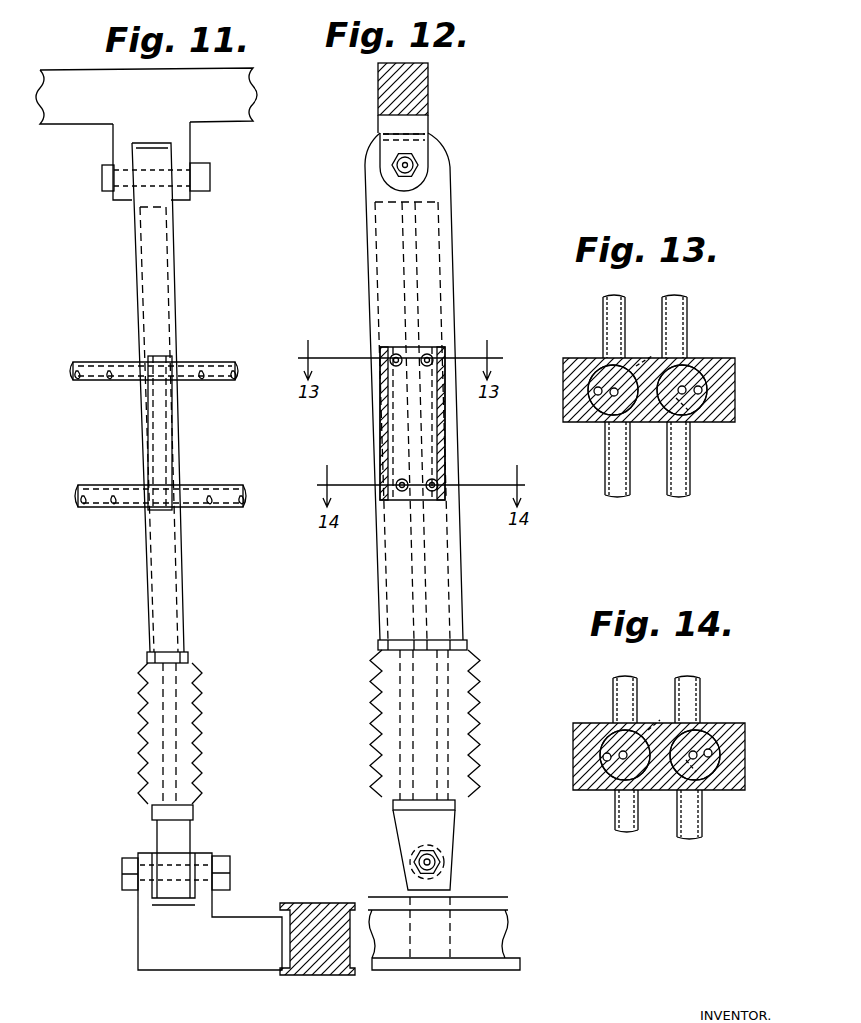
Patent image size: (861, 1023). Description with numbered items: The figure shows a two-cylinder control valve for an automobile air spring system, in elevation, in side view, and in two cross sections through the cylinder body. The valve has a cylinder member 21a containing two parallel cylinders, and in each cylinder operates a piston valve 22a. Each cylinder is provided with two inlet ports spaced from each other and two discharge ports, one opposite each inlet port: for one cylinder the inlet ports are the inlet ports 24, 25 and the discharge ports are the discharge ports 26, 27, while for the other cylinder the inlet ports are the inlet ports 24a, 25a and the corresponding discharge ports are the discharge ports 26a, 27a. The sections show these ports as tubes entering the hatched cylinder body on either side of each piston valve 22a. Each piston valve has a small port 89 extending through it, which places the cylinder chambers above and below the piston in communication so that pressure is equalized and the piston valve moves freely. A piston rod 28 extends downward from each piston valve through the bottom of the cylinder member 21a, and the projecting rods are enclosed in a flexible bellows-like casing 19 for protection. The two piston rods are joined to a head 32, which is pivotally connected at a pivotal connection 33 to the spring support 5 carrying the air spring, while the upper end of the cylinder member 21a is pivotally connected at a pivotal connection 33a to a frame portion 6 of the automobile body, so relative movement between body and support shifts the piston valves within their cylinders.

In FIG. 11, the spring support 5 is at (145, 946).
In FIG. 12, the spring support 5 is at (490, 914).
In FIG. 11, the frame portion 6 is at (253, 78).
In FIG. 12, the frame portion 6 is at (423, 84).
In FIG. 11, the bellows-like casing 19 is at (200, 730).
In FIG. 12, the bellows-like casing 19 is at (378, 750).
In FIG. 11, the cylinder member 21a is at (138, 310).
In FIG. 12, the cylinder member 21a is at (368, 247).
In FIG. 13, the cylinder member 21a is at (600, 356).
In FIG. 14, the cylinder member 21a is at (573, 741).
In FIG. 11, the piston valve 22a is at (175, 450).
In FIG. 13, the piston valve 22a is at (690, 366).
In FIG. 14, the piston valve 22a is at (606, 733).
In FIG. 13, the inlet port 24 is at (610, 316).
In FIG. 13, the inlet port 24a is at (678, 318).
In FIG. 14, the inlet port 25 is at (616, 692).
In FIG. 14, the inlet port 25a is at (690, 694).
In FIG. 13, the discharge port 26 is at (617, 463).
In FIG. 13, the discharge port 26a is at (680, 465).
In FIG. 14, the discharge port 27 is at (628, 808).
In FIG. 14, the discharge port 27a is at (694, 808).
In FIG. 11, the piston rod 28 is at (175, 684).
In FIG. 12, the piston rod 28 is at (395, 583).
In FIG. 13, the piston rod 28 is at (646, 356).
In FIG. 14, the piston rod 28 is at (656, 722).
In FIG. 11, the head 32 is at (180, 836).
In FIG. 12, the head 32 is at (445, 828).
In FIG. 11, the pivotal connection 33 is at (223, 870).
In FIG. 12, the pivotal connection 33 is at (436, 862).
In FIG. 11, the pivotal connection 33a is at (102, 180).
In FIG. 12, the pivotal connection 33a is at (414, 163).
In FIG. 11, the small port 89 is at (148, 430).
In FIG. 12, the small port 89 is at (380, 428).
In FIG. 13, the small port 89 is at (700, 391).
In FIG. 14, the small port 89 is at (708, 735).